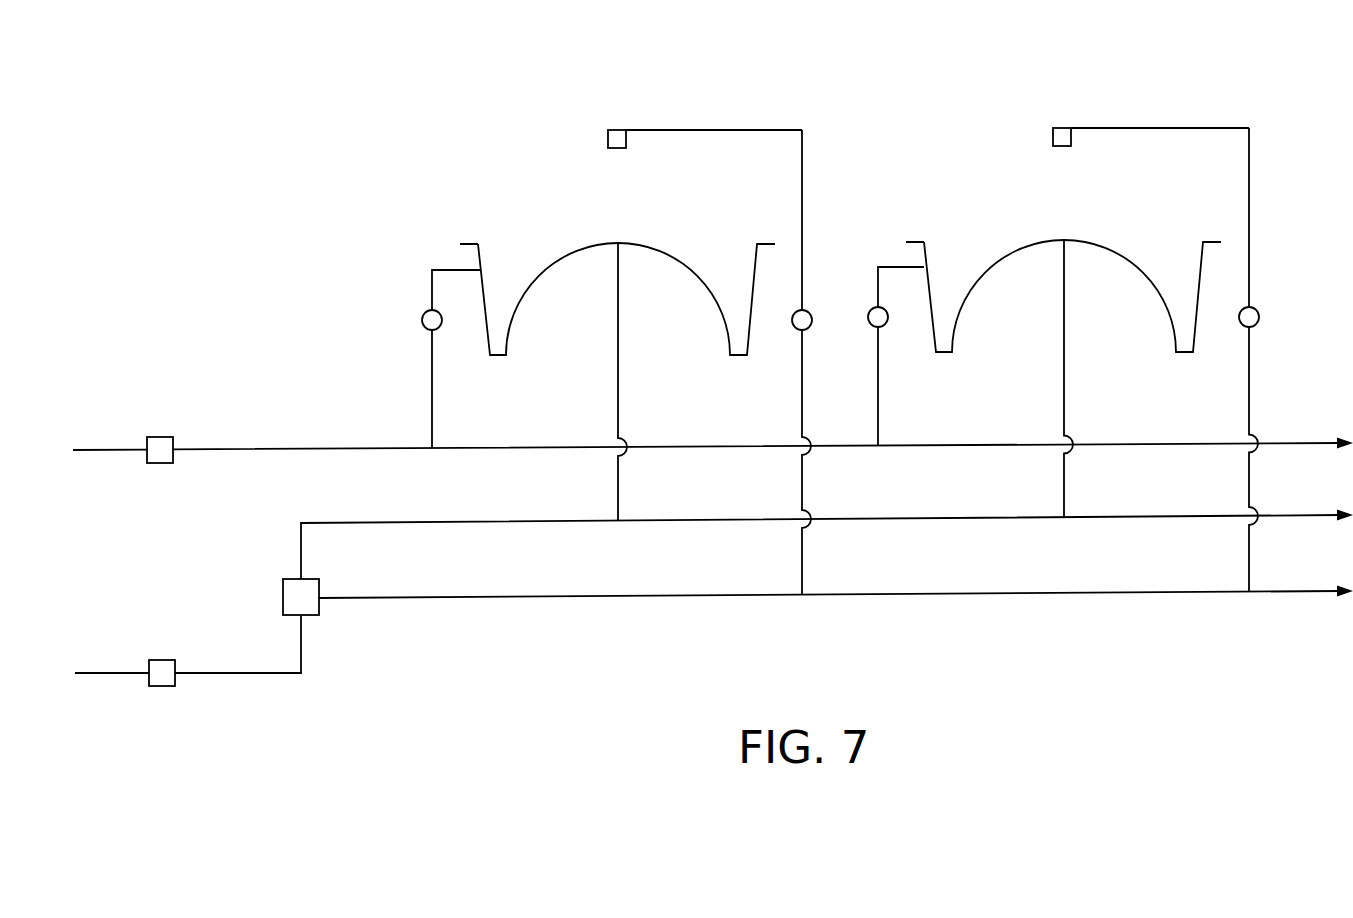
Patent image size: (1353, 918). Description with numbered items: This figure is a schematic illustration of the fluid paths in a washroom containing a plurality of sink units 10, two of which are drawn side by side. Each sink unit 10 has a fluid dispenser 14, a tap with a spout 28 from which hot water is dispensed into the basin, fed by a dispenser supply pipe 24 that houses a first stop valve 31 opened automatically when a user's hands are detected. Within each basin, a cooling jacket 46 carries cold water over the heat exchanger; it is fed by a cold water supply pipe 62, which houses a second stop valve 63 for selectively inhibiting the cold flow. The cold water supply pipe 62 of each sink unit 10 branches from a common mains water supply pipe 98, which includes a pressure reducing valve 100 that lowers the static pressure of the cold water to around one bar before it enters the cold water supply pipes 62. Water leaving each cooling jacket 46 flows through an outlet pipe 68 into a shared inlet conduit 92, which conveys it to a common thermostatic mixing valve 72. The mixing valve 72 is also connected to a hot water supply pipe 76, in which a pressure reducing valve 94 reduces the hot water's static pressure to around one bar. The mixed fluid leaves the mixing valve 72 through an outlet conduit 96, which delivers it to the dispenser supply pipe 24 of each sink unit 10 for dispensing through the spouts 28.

The sink unit 10 is at (427, 206).
The fluid dispenser 14 is at (742, 130).
The dispenser supply pipe 24 is at (802, 396).
The spout 28 is at (615, 148).
The first stop valve 31 is at (811, 316).
The cooling jacket 46 is at (573, 248).
The cold water supply pipe 62 is at (432, 385).
The second stop valve 63 is at (422, 321).
The outlet pipe 68 is at (620, 373).
The thermostatic mixing valve 72 is at (283, 597).
The hot water supply pipe 76 is at (243, 674).
The inlet conduit 92 is at (482, 523).
The pressure reducing valve 94 is at (162, 686).
The outlet conduit 96 is at (630, 598).
The mains water supply pipe 98 is at (281, 448).
The pressure reducing valve 100 is at (160, 463).